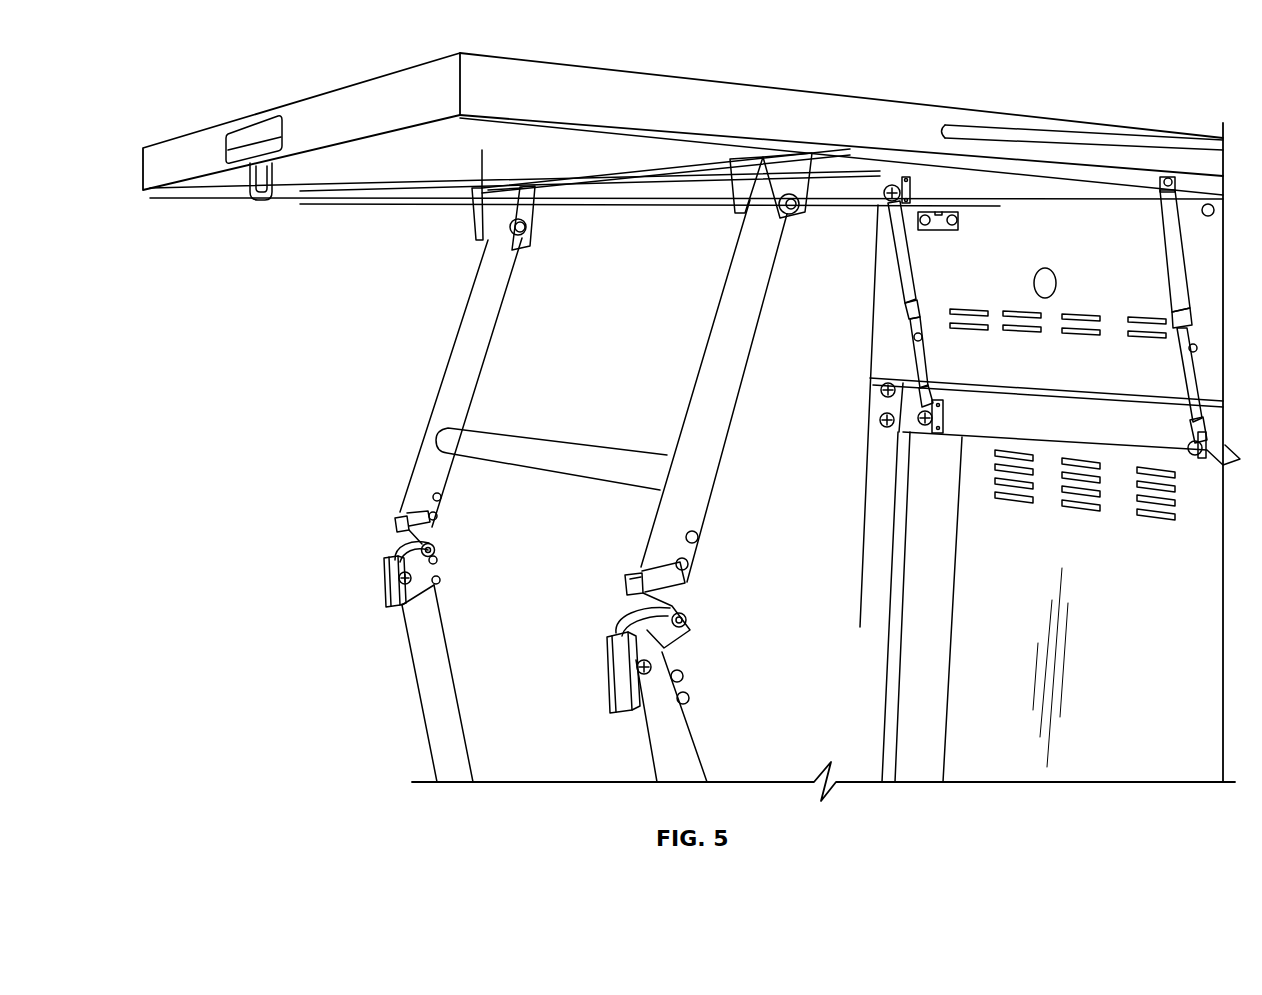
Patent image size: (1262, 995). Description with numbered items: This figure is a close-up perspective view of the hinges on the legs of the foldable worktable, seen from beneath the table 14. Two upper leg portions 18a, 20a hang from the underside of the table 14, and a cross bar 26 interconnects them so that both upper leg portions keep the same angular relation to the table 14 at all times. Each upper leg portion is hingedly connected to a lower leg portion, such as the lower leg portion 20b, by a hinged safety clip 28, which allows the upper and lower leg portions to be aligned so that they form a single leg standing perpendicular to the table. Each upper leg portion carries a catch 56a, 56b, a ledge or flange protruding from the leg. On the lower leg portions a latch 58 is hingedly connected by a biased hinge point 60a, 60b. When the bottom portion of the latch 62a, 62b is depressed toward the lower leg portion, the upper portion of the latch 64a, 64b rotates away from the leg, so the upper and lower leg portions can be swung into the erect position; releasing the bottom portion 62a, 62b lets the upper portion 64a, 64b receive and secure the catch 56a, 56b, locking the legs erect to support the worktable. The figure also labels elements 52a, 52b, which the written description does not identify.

The table 14 is at (906, 97).
The upper leg portion 18a is at (720, 445).
The upper leg portion 20a is at (476, 345).
The lower leg portion 20b is at (462, 747).
The cross bar 26 is at (607, 452).
The hinged safety clip 28 is at (612, 598).
The pivot pin 52a is at (436, 546).
The pivot pin 52b is at (688, 613).
The catch 56a is at (396, 520).
The catch 56b is at (626, 580).
The latch 58 is at (358, 563).
The biased hinge point 60a is at (405, 606).
The biased hinge point 60b is at (660, 667).
The bottom portion of the latch 62a is at (382, 575).
The bottom portion of the latch 62b is at (607, 668).
The upper portion of the latch 64a is at (386, 556).
The upper portion of the latch 64b is at (612, 628).